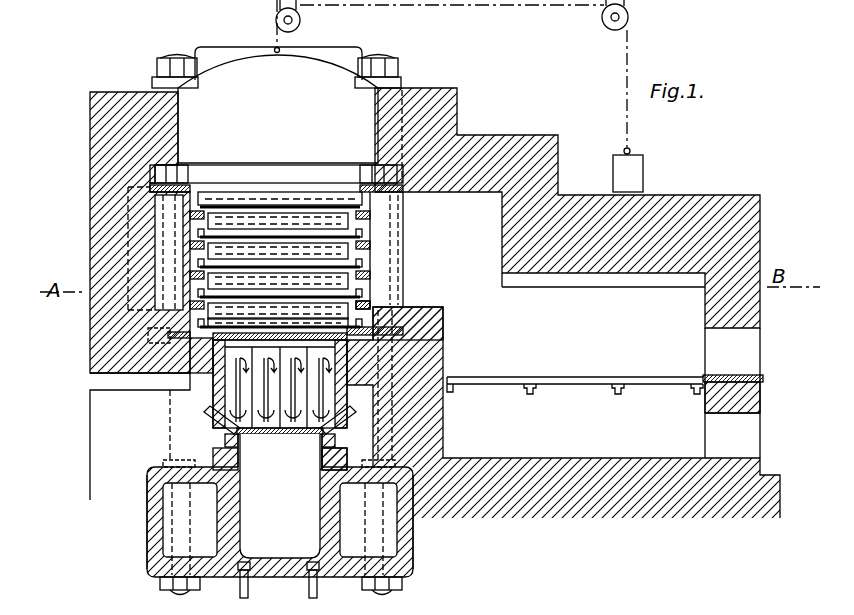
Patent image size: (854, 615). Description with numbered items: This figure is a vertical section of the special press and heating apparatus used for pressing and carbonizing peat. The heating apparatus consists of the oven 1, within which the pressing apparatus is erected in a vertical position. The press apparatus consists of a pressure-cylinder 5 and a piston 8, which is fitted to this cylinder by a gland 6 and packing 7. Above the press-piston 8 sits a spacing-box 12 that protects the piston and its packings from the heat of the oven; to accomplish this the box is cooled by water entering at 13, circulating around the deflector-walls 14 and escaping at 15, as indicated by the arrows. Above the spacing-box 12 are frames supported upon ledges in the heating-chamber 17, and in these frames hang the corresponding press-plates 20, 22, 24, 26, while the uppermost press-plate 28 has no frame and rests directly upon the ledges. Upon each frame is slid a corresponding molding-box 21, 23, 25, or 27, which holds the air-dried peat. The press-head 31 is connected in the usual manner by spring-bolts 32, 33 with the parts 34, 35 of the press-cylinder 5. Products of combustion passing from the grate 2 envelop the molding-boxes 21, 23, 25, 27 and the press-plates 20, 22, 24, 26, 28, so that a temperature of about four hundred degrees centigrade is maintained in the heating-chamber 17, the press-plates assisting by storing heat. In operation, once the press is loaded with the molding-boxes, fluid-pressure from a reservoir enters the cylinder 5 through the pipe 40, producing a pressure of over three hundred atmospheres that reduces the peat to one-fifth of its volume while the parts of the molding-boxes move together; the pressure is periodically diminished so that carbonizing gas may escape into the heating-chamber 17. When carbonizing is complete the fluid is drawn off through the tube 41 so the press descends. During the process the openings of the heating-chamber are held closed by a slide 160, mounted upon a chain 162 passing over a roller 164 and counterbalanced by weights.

The oven 1 is at (454, 116).
The grate 2 is at (578, 385).
The pressure-cylinder 5 is at (225, 518).
The gland 6 is at (339, 449).
The packing 7 is at (320, 487).
The piston 8 is at (280, 496).
The spacing-box 12 is at (223, 389).
The water inlet 13 is at (340, 420).
The deflector-walls 14 is at (305, 412).
The water outlet 15 is at (224, 433).
The heating-chamber 17 is at (434, 232).
The press-plate 20 is at (392, 331).
The molding-box 21 is at (440, 318).
The press-plate 22 is at (372, 304).
The molding-box 23 is at (352, 322).
The press-plate 24 is at (352, 292).
The molding-box 25 is at (352, 262).
The press-plate 26 is at (352, 234).
The molding-box 27 is at (362, 205).
The uppermost press-plate 28 is at (282, 200).
The press-head 31 is at (278, 109).
The spring-bolt 32 is at (185, 542).
The spring-bolt 33 is at (372, 523).
The part of press-cylinder 34 is at (150, 539).
The part of press-cylinder 35 is at (412, 549).
The pipe 40 is at (238, 596).
The tube 41 is at (322, 593).
The slide 160 is at (204, 50).
The chain 162 is at (276, 34).
The roller 164 is at (300, 26).